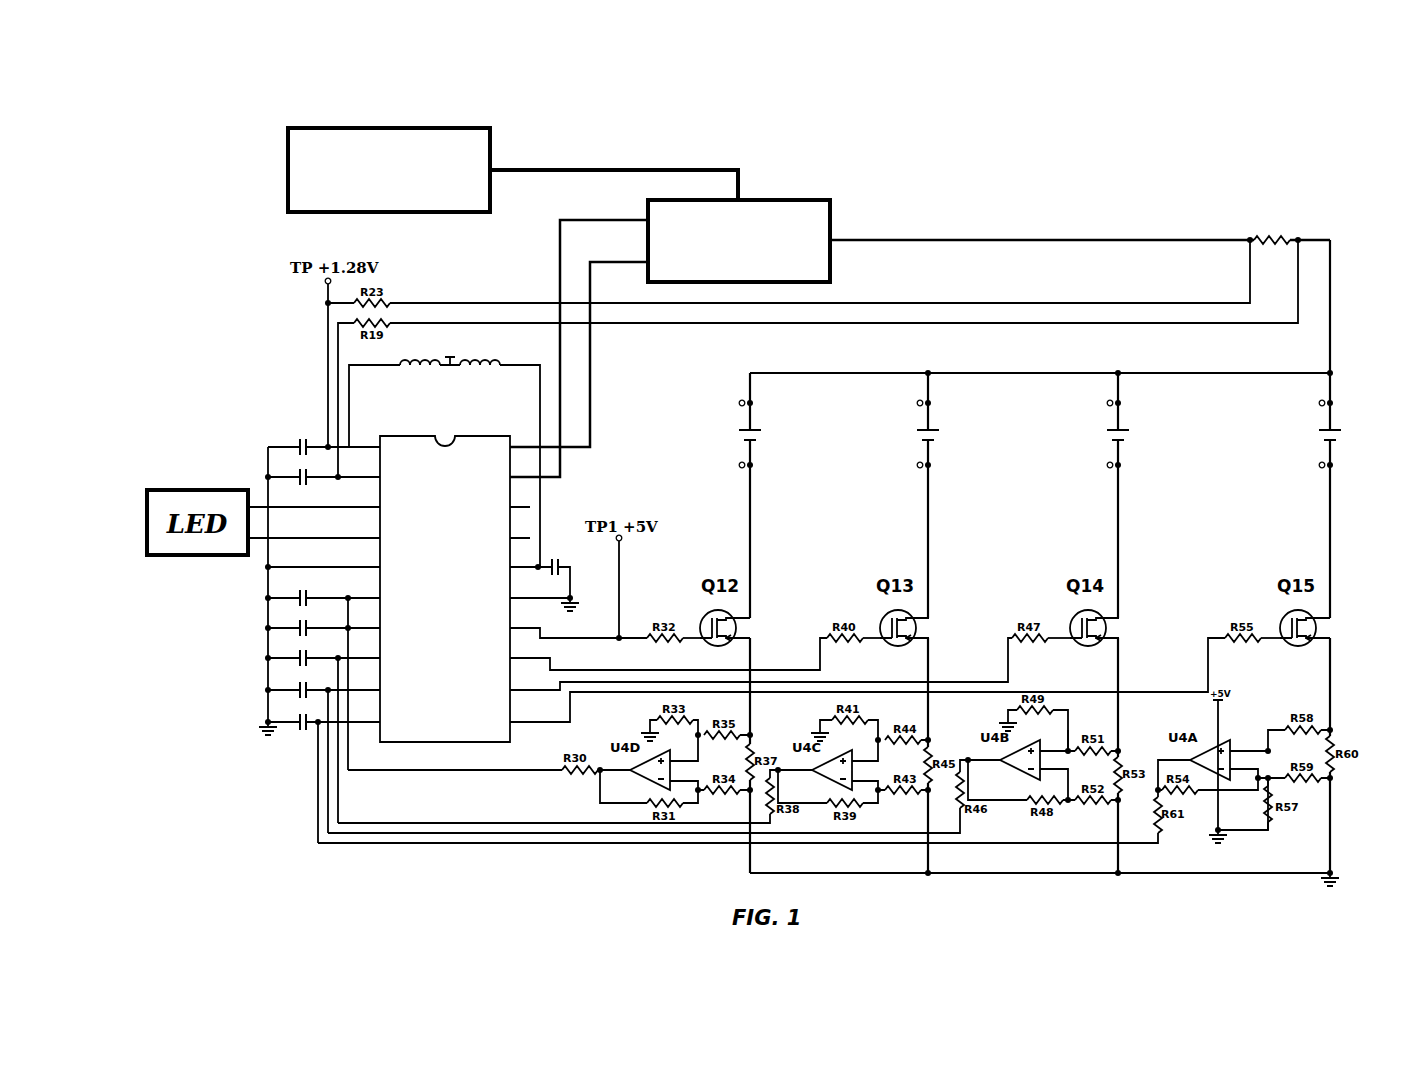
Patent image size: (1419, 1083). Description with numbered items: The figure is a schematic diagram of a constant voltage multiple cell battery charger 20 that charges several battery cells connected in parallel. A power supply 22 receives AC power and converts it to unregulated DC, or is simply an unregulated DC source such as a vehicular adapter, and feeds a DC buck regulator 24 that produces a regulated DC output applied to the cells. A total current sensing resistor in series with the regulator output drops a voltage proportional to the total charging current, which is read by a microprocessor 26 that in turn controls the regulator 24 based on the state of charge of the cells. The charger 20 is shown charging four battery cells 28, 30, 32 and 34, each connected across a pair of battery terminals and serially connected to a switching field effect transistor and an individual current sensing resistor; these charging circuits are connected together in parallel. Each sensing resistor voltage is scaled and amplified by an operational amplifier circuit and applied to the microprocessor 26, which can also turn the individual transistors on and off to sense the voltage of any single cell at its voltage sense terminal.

The battery charger 20 is at (1260, 98).
The power supply 22 is at (492, 128).
The regulator 24 is at (830, 198).
The microprocessor 26 is at (457, 741).
The battery cell 28 is at (768, 432).
The battery cell 30 is at (946, 432).
The battery cell 32 is at (1136, 432).
The battery cell 34 is at (1348, 432).